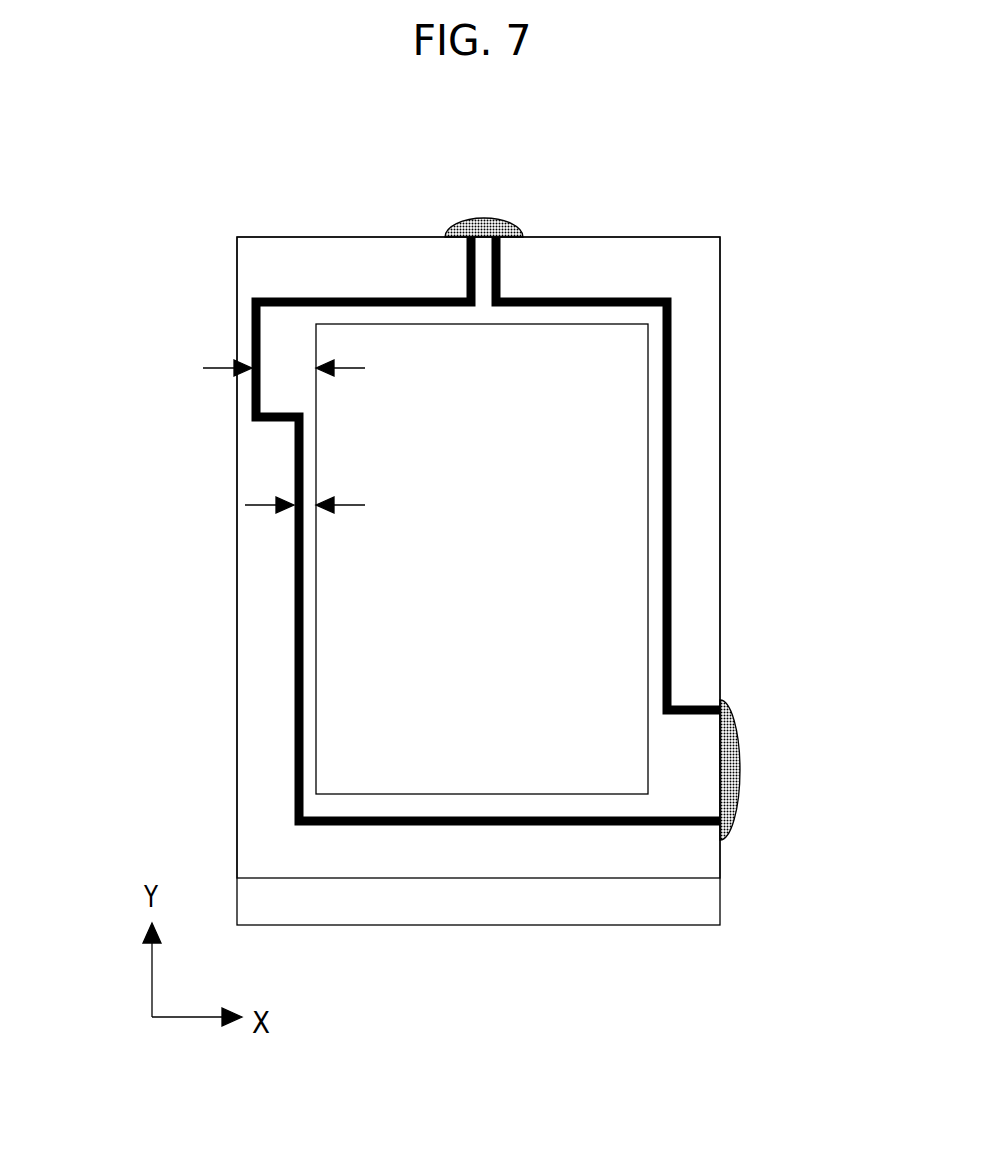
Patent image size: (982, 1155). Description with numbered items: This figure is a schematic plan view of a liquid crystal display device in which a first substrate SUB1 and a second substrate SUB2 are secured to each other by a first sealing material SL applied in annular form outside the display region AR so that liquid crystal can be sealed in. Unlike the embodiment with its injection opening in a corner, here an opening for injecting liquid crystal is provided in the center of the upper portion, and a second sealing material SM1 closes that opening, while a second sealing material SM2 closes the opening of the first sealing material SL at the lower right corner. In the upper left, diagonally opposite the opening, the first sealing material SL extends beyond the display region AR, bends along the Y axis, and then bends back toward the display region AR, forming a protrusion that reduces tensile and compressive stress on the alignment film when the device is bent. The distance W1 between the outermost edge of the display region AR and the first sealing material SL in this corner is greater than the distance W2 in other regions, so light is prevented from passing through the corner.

The first substrate SUB1 is at (475, 900).
The second substrate SUB2 is at (671, 272).
The display region AR is at (348, 728).
The first sealing material SL is at (372, 297).
The second sealing material SM1 is at (488, 218).
The second sealing material SM2 is at (730, 777).
The distance between the outermost edge of the display region and the first sealing W1 is at (254, 370).
The distance between the outermost edge of the display region and the first sealing W2 is at (268, 507).